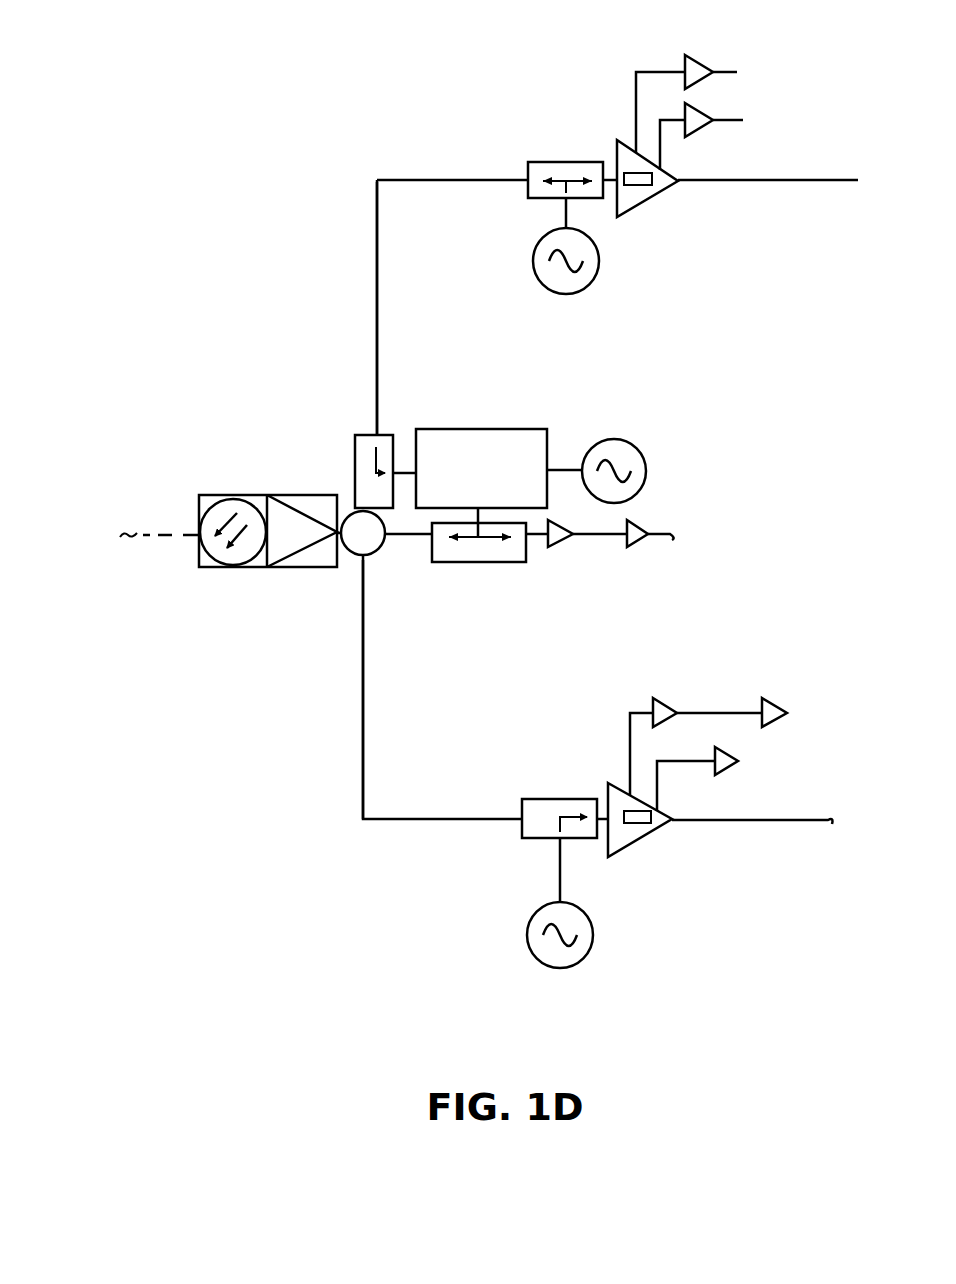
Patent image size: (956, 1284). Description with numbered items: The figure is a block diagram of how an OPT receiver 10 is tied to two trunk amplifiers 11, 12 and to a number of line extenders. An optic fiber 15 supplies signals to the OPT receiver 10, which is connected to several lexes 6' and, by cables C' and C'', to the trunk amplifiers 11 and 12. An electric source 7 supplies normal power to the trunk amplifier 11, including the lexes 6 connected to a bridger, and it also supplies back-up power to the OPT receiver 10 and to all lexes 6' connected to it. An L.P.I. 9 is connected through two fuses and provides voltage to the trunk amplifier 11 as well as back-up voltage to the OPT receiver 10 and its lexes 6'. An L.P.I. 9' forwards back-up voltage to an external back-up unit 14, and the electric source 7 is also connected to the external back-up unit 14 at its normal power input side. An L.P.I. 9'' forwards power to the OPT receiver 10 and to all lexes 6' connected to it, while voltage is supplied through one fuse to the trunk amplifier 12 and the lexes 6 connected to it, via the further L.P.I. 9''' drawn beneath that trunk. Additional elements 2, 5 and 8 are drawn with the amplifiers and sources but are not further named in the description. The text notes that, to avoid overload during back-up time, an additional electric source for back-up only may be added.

The attenuator in amplifier 2 is at (647, 186).
The output amplifier branches 5 is at (703, 68).
The lexes 6 is at (716, 739).
The lexes 6' is at (600, 561).
The electric source 7 is at (537, 247).
The oscillator 8 is at (636, 443).
The L.P.I. 9 is at (572, 156).
The L.P.I. 9' is at (367, 470).
The L.P.I. 9'' is at (479, 560).
The optical modulator 9''' is at (552, 883).
The OPT receiver 10 is at (265, 495).
The trunk amplifier 11 is at (630, 210).
The trunk amplifier 12 is at (623, 850).
The external back-up unit 14 is at (510, 429).
The optic fiber 15 is at (141, 528).
The cable C' is at (346, 308).
The cable C'' is at (333, 689).